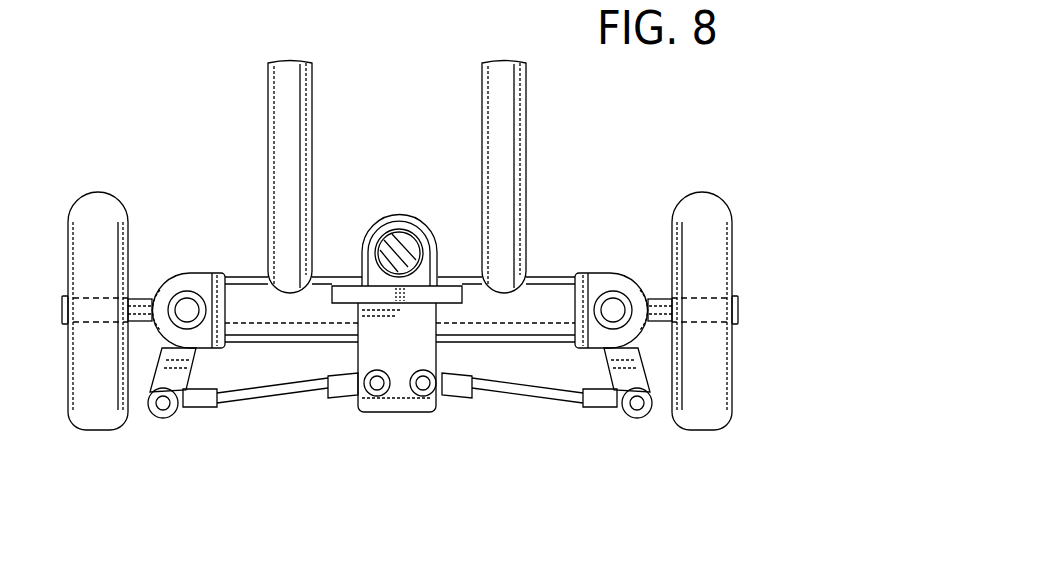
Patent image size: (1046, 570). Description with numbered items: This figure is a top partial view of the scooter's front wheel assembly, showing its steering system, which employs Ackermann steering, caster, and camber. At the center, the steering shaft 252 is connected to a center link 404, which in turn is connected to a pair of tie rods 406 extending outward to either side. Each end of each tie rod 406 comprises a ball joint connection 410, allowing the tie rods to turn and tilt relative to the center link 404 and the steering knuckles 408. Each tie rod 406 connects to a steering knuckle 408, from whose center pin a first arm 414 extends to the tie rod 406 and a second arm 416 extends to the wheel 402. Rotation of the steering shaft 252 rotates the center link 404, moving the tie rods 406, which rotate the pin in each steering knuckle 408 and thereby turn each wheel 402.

The wheel 402 is at (107, 207).
The center link 404 is at (400, 414).
The tie rod 406 is at (281, 405).
The steering knuckle 408 is at (197, 283).
The ball joint connection 410 is at (163, 408).
The first arm 414 is at (195, 369).
The second arm 416 is at (138, 303).
The steering shaft 252 is at (385, 218).